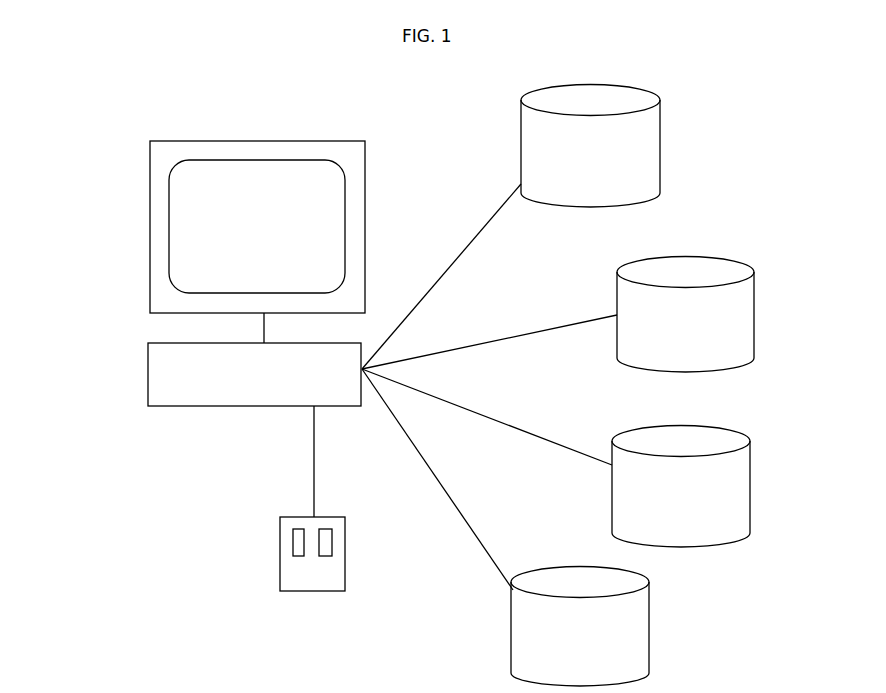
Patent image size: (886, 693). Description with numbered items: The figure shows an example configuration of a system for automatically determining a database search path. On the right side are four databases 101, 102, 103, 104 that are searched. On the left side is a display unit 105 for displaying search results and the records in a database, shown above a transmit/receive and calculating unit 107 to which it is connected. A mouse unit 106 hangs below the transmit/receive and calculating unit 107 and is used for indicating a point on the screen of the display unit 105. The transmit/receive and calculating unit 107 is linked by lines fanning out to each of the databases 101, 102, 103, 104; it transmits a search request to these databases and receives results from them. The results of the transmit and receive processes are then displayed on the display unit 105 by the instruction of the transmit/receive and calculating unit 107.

The database 101 is at (660, 122).
The database 102 is at (755, 273).
The database 103 is at (733, 542).
The database 104 is at (650, 630).
The display unit 105 is at (148, 219).
The mouse unit 106 is at (280, 572).
The transmit/receive and calculating unit 107 is at (148, 388).